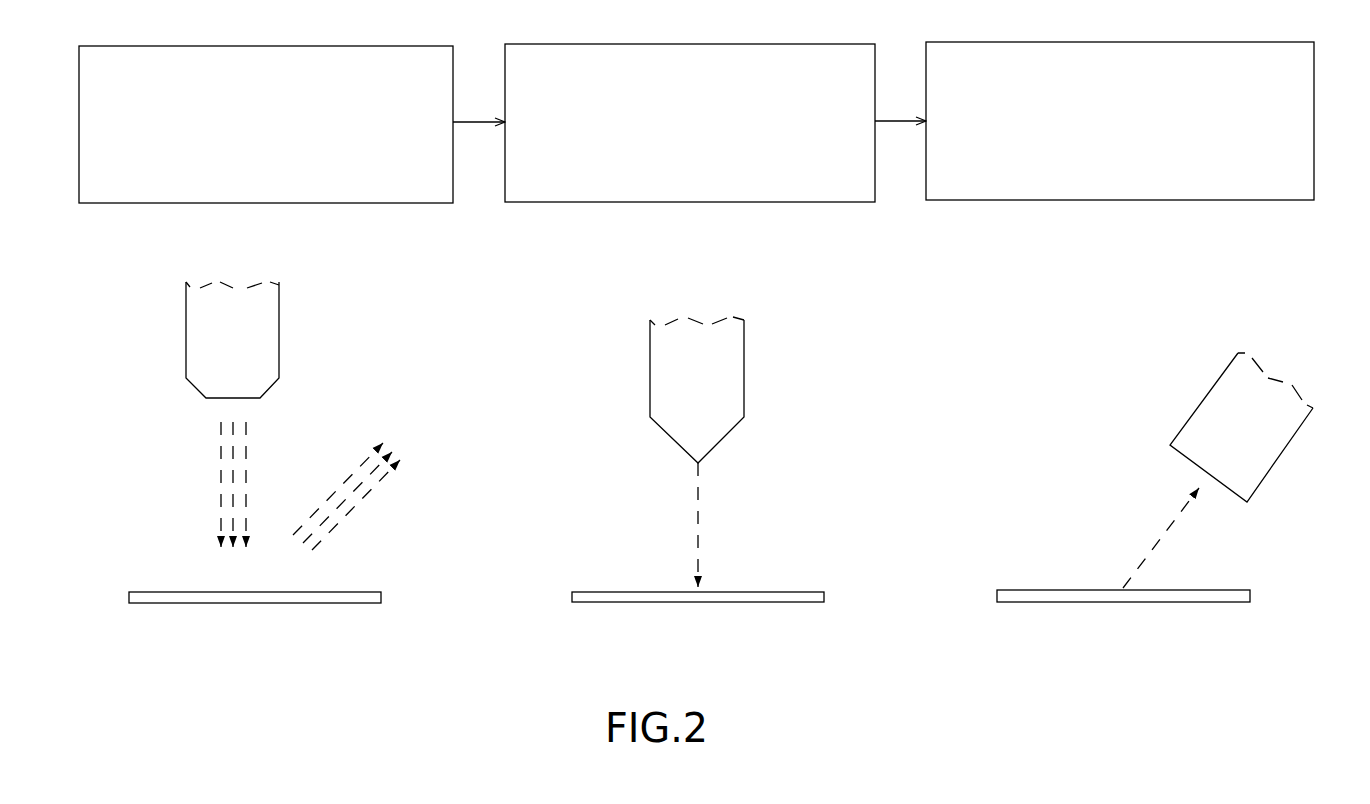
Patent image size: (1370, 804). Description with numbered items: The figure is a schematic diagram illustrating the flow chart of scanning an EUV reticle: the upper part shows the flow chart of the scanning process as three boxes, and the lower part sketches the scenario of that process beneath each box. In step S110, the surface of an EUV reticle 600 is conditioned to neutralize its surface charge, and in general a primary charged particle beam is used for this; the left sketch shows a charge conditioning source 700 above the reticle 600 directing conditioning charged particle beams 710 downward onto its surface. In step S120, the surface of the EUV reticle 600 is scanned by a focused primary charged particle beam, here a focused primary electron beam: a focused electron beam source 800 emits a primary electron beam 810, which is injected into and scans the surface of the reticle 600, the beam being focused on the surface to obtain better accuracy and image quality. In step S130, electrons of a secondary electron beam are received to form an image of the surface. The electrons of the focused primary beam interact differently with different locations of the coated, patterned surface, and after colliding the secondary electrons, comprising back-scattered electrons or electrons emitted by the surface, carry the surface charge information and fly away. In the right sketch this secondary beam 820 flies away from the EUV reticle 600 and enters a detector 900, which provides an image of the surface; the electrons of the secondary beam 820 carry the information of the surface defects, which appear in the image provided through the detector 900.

The step of conditioning surface charge S110 is at (301, 188).
The step of injecting focused primary electron beam S120 is at (724, 187).
The step of receiving secondary electrons S130 is at (1156, 185).
The EUV reticle 600 is at (195, 596).
The charge conditioning source 700 is at (213, 336).
The conditioning charged particle beams 710 is at (233, 462).
The focused electron beam source 800 is at (662, 368).
The primary electron beam 810 is at (697, 498).
The secondary beam 820 is at (1157, 545).
The detector 900 is at (1208, 412).